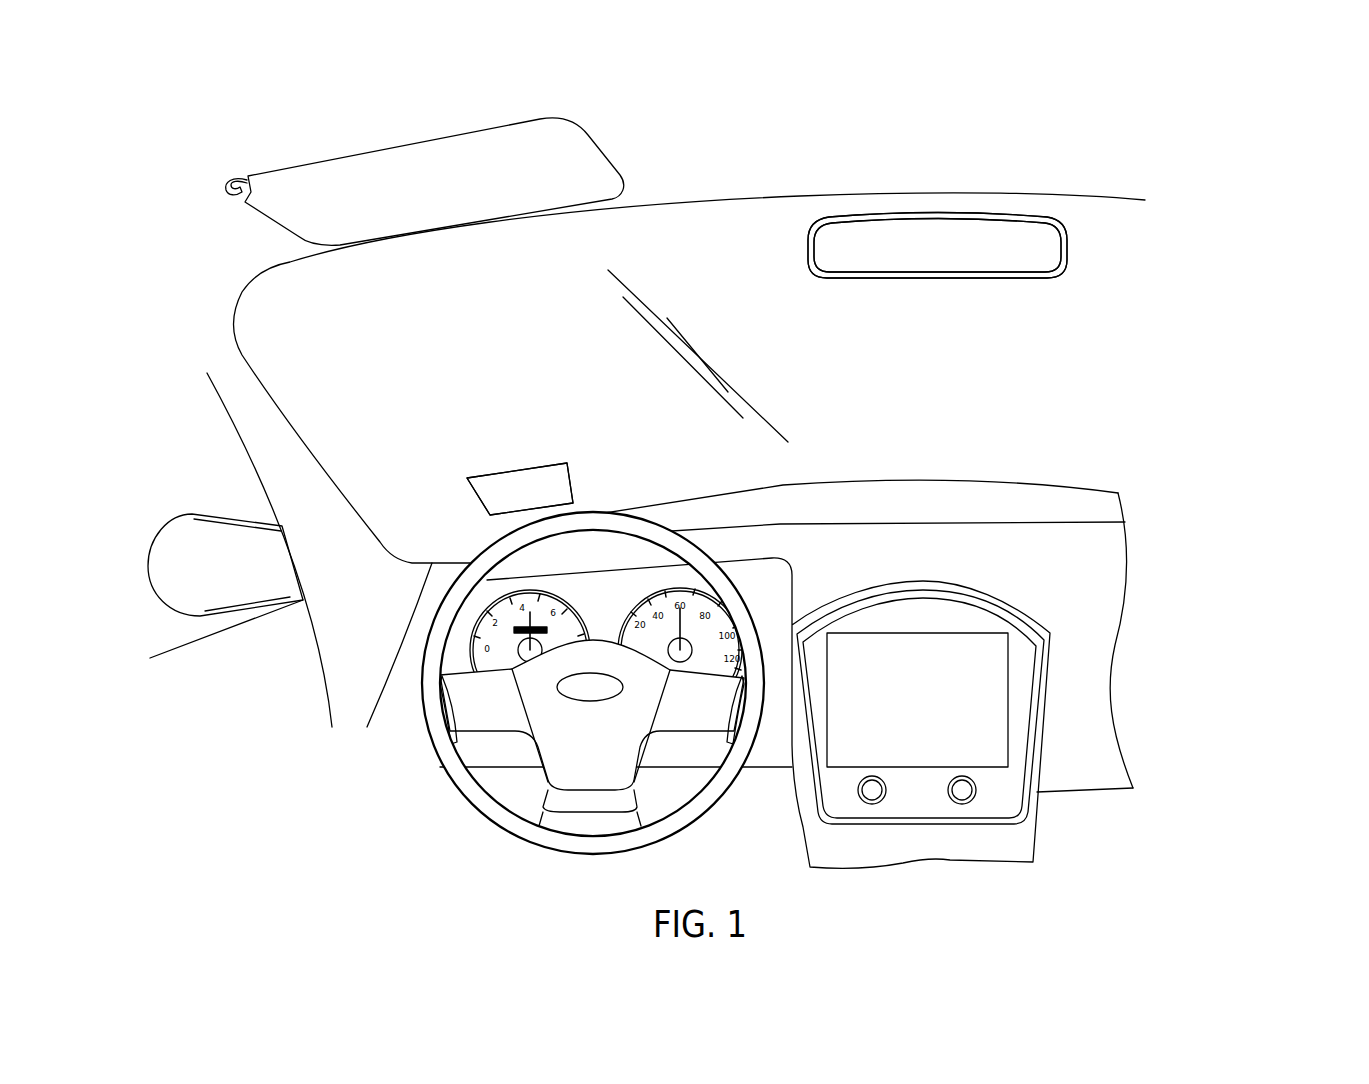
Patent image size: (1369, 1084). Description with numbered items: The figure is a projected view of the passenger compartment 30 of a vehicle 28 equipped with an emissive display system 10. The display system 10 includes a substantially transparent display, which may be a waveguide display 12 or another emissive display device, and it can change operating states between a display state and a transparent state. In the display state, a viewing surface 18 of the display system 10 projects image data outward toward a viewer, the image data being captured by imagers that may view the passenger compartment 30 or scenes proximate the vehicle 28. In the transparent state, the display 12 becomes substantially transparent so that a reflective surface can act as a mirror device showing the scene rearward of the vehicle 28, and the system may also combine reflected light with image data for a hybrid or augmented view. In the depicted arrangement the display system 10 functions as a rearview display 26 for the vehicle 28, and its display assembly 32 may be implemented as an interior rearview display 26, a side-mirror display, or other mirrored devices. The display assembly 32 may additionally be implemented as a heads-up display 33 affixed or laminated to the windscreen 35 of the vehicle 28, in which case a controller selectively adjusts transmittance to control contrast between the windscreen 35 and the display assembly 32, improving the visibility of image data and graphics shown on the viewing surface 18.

The emissive display system 10 is at (790, 147).
The waveguide display 12 is at (1013, 237).
The viewing surface 18 is at (918, 257).
The rearview display 26 is at (852, 243).
The vehicle 28 is at (1253, 101).
The passenger compartment 30 is at (1188, 498).
The display assembly 32 is at (1067, 271).
The heads-up display 33 is at (490, 488).
The windscreen 35 is at (268, 305).